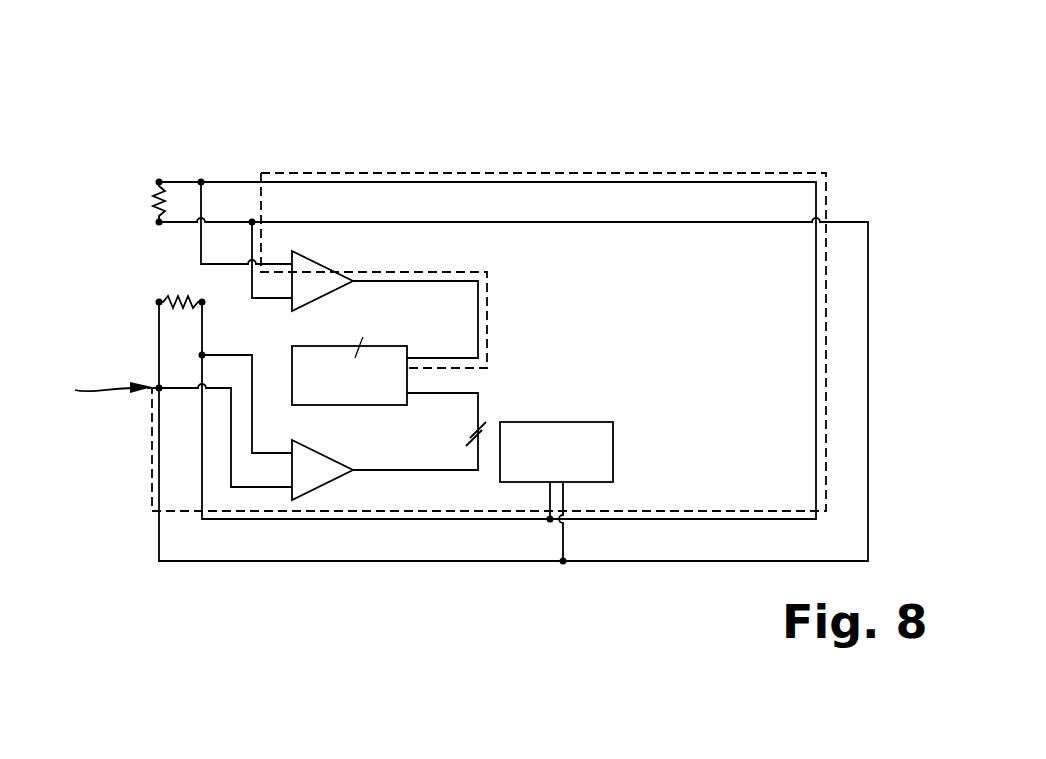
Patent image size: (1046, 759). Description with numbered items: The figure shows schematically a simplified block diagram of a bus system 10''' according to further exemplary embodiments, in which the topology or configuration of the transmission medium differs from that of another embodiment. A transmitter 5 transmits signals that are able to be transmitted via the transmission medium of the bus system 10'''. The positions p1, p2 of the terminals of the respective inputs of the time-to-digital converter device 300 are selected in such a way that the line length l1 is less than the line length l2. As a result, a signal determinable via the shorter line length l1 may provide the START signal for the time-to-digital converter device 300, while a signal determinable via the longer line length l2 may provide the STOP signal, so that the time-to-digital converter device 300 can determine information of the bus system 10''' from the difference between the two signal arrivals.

The bus system 10''' is at (512, 290).
The position of terminal p1 is at (203, 140).
The position of terminal p2 is at (126, 348).
The line length l1 is at (670, 173).
The line length l2 is at (433, 469).
The time-to-digital converter device 300 is at (330, 389).
The transmitter 5 is at (548, 466).